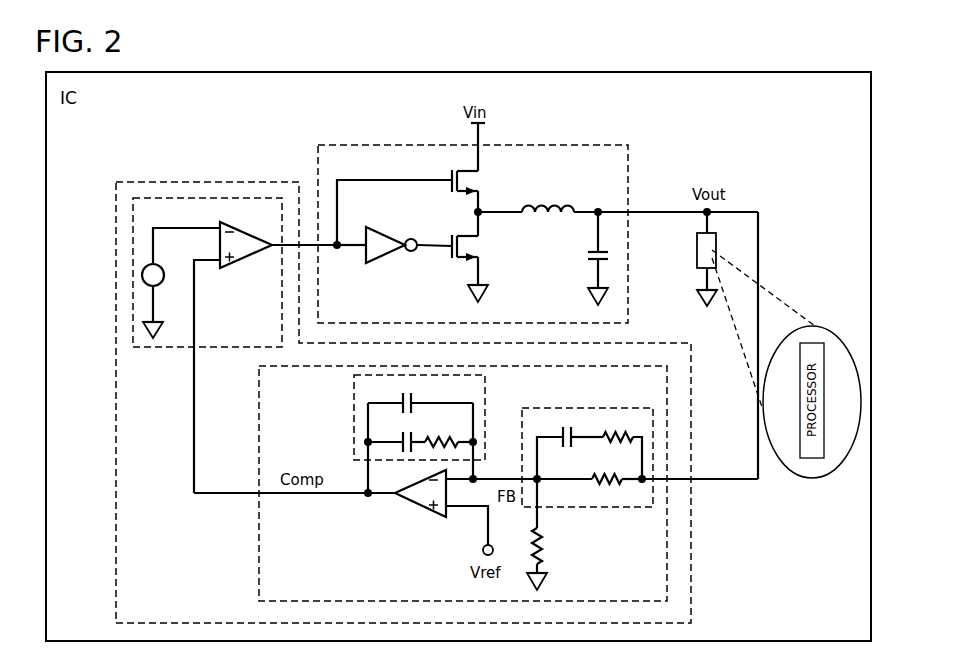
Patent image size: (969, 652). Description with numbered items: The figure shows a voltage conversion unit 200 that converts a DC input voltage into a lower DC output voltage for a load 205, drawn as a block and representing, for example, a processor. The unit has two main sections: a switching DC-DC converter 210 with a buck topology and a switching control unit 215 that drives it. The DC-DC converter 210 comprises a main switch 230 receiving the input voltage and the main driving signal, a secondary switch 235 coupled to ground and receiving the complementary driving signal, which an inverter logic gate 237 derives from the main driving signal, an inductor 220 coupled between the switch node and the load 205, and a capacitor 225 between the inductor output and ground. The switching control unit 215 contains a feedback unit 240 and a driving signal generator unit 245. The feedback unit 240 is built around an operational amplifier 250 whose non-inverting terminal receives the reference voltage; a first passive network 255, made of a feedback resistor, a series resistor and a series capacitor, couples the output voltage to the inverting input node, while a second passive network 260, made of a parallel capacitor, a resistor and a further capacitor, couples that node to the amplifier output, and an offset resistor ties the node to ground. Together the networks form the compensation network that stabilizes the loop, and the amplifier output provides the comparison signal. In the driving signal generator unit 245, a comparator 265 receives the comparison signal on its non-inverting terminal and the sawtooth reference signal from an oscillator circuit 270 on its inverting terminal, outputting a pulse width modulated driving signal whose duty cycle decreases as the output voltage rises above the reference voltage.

The voltage conversion unit 200 is at (682, 158).
The load 205 is at (717, 243).
The switching DC-DC converter 210 is at (628, 300).
The switching control unit 215 is at (691, 552).
The inductor 220 is at (553, 205).
The capacitor 225 is at (586, 258).
The main switch 230 is at (470, 182).
The secondary switch 235 is at (477, 247).
The inverter logic gate 237 is at (384, 226).
The feedback unit 240 is at (258, 530).
The driving signal generator unit 245 is at (222, 347).
The operational amplifier 250 is at (412, 507).
The first passive network 255 is at (595, 508).
The second passive network 260 is at (485, 400).
The comparator 265 is at (245, 222).
The oscillator circuit 270 is at (142, 271).